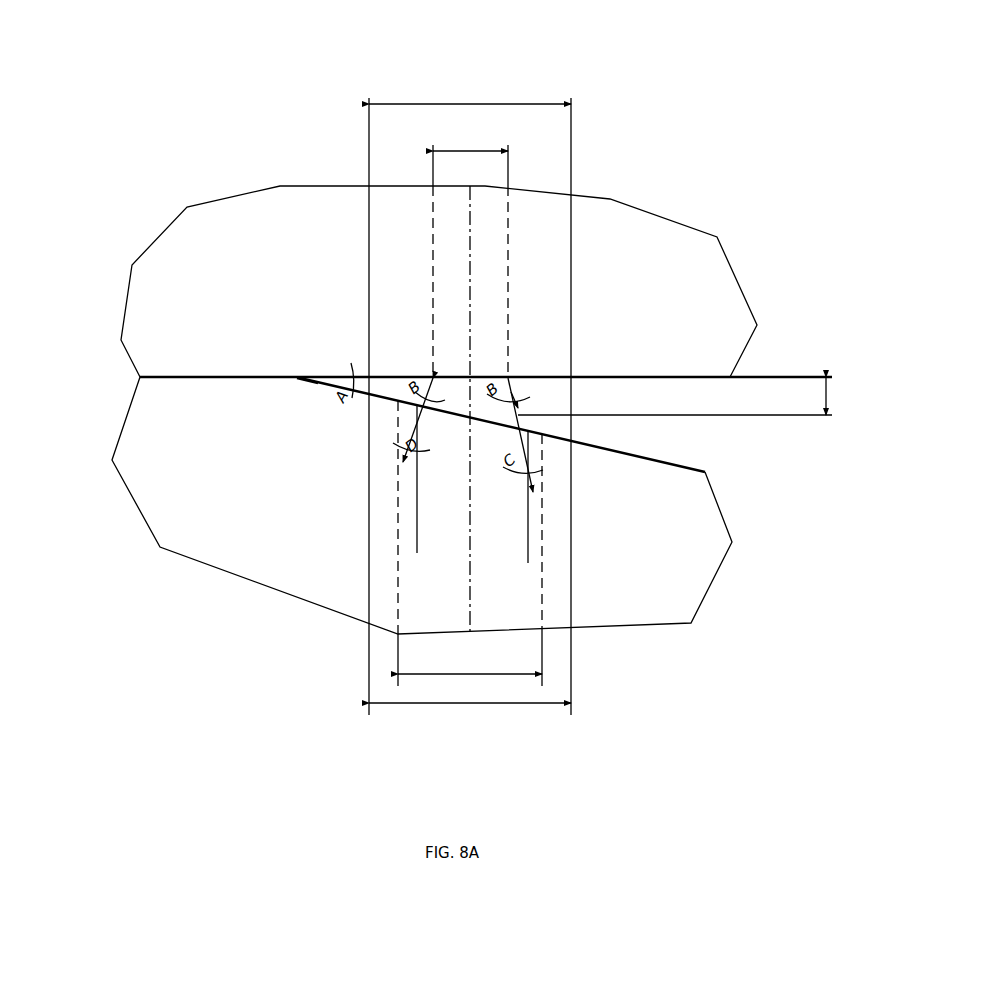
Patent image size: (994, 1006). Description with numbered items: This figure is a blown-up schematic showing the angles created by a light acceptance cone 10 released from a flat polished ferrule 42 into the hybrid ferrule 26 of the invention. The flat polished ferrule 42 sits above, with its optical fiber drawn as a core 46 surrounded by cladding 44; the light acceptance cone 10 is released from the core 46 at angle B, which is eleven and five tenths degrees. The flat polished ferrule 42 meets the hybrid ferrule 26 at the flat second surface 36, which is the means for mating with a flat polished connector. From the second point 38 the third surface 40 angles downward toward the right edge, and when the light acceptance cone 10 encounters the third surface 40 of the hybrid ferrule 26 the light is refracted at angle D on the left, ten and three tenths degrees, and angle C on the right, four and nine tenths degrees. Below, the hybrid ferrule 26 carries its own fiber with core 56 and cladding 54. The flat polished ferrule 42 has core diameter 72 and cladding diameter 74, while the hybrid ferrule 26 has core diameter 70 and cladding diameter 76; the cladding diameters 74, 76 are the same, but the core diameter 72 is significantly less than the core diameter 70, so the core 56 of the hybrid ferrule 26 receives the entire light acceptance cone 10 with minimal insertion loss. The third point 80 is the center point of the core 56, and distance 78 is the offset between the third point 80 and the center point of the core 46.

The light acceptance cone 10 is at (471, 418).
The hybrid ferrule 26 is at (173, 478).
The second surface 36 is at (207, 376).
The second point 38 is at (297, 378).
The third surface 40 is at (690, 467).
The flat polished ferrule 42 is at (227, 270).
The cladding 44 is at (572, 292).
The core 46 is at (488, 228).
The cladding 54 is at (379, 573).
The core 56 is at (413, 589).
The core diameter 70 is at (477, 675).
The core diameter 72 is at (480, 150).
The cladding diameter 74 is at (448, 103).
The cladding diameter 76 is at (444, 705).
The distance 78 is at (828, 395).
The third point 80 is at (471, 418).